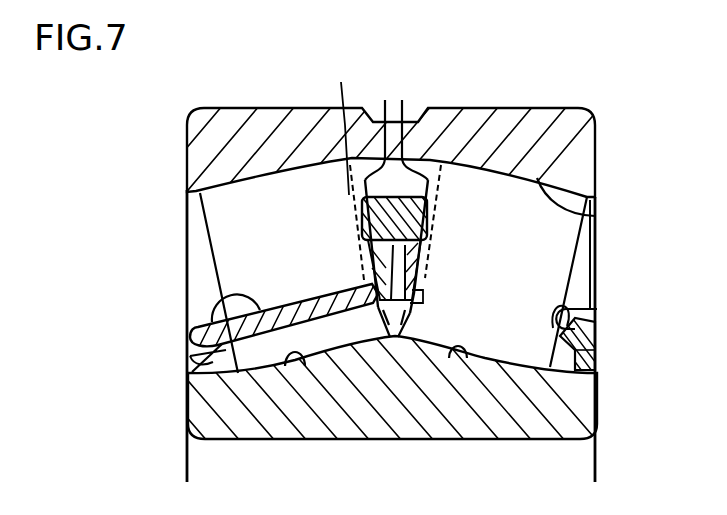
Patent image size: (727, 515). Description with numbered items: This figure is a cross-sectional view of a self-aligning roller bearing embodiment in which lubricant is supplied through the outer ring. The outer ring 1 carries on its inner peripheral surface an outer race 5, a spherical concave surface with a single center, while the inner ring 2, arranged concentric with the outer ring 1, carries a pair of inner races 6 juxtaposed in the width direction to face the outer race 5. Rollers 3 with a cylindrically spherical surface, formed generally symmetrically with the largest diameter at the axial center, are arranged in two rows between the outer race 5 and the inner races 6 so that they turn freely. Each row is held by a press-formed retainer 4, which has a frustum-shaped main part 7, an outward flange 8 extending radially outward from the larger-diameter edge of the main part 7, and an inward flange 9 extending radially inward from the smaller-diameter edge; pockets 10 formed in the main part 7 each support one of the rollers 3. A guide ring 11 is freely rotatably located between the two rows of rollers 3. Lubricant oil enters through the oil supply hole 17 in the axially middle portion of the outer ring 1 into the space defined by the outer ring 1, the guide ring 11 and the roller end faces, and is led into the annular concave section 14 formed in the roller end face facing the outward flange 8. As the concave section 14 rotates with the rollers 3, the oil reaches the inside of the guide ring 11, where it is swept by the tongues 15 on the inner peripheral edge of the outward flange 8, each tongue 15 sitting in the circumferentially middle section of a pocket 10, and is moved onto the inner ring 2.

The outer ring 1 is at (590, 155).
The inner ring 2 is at (592, 420).
The rollers 3 is at (225, 217).
The retainer 4 is at (222, 332).
The outer race 5 is at (590, 220).
The inner races 6 is at (295, 360).
The main part 7 is at (262, 307).
The outward flange 8 is at (413, 236).
The inward flange 9 is at (212, 368).
The pockets 10 is at (564, 313).
The guide ring 11 is at (368, 216).
The concave section 14 is at (514, 85).
The tongues 15 is at (397, 345).
The oil supply hole 17 is at (414, 141).